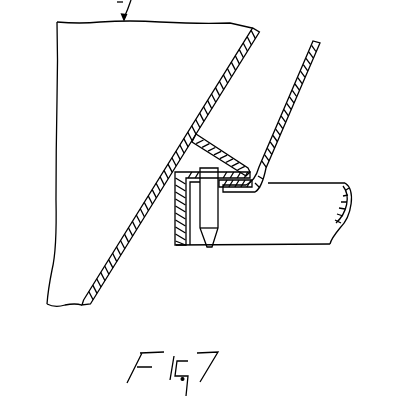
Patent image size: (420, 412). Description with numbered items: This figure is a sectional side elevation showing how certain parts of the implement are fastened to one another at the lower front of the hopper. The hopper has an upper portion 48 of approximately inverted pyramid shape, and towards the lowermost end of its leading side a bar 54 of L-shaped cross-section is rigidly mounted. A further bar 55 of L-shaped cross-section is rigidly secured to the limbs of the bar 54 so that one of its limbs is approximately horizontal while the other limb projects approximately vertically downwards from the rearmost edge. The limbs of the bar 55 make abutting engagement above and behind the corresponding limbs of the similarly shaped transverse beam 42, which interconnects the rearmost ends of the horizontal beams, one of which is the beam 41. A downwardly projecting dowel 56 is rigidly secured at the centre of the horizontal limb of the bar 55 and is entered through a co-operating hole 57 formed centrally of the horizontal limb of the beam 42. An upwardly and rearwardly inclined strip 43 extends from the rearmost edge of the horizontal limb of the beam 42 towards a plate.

The beam 41 is at (328, 244).
The transverse beam 42 is at (182, 243).
The inclined strip 43 is at (314, 80).
The upper portion of hopper 48 is at (256, 39).
The bar 54 is at (186, 153).
The bar 55 is at (175, 208).
The dowel 56 is at (219, 236).
The hole 57 is at (225, 190).